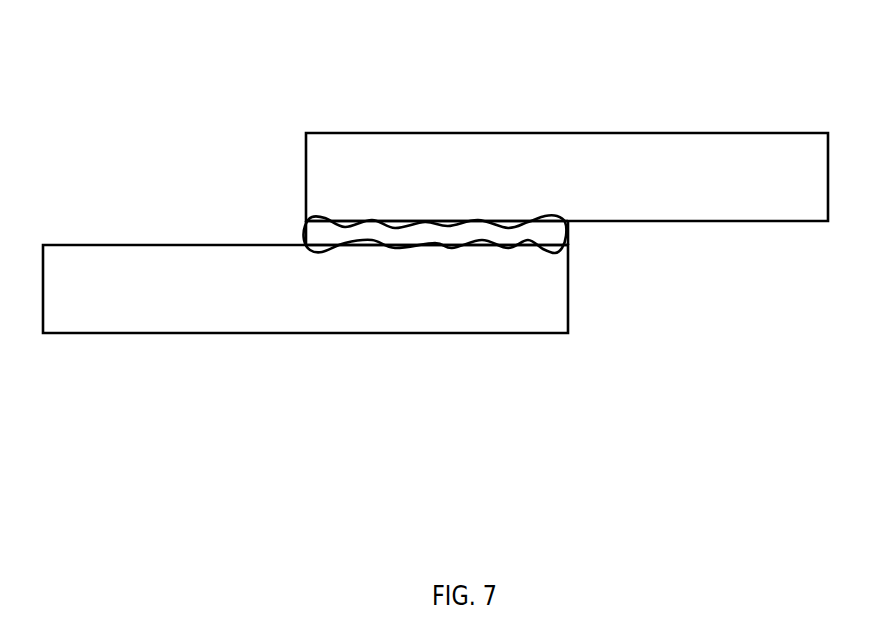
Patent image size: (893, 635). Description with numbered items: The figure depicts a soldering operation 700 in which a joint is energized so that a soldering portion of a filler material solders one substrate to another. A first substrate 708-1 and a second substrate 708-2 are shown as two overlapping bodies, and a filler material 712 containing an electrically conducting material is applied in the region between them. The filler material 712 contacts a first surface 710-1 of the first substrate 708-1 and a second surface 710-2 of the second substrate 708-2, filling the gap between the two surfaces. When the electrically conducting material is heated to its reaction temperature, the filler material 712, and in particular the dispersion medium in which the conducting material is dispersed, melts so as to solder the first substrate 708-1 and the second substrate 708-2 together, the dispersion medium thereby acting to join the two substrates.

The soldering operation 700 is at (211, 112).
The first substrate 708-1 is at (567, 189).
The second substrate 708-2 is at (305, 277).
The first surface 710-1 is at (443, 222).
The second surface 710-2 is at (483, 245).
The filler material 712 is at (558, 237).